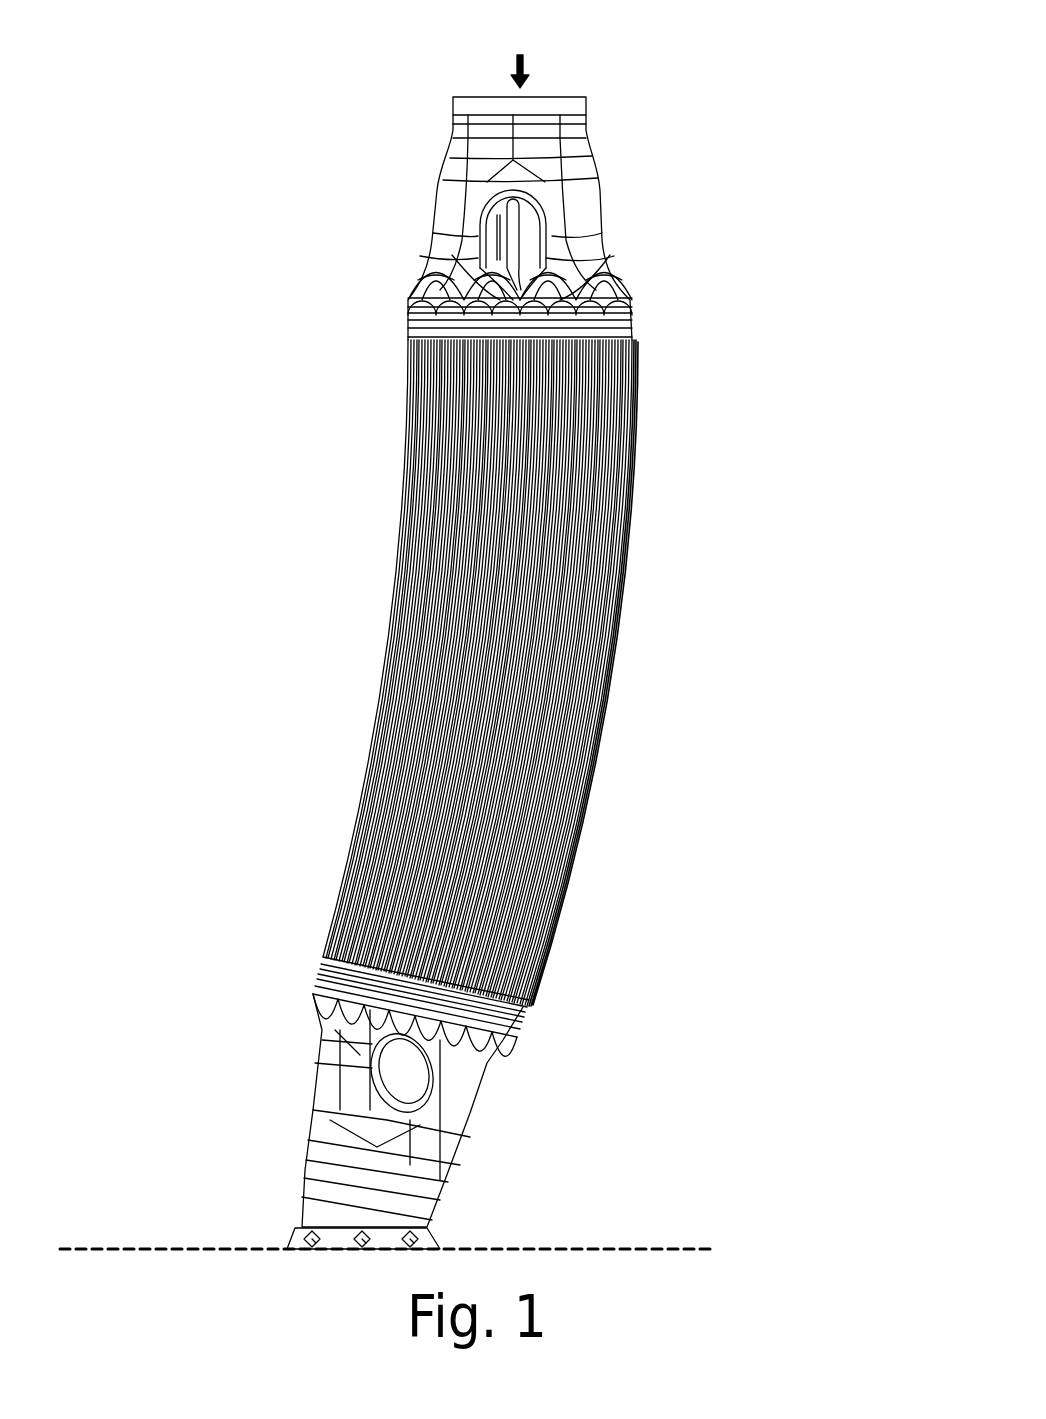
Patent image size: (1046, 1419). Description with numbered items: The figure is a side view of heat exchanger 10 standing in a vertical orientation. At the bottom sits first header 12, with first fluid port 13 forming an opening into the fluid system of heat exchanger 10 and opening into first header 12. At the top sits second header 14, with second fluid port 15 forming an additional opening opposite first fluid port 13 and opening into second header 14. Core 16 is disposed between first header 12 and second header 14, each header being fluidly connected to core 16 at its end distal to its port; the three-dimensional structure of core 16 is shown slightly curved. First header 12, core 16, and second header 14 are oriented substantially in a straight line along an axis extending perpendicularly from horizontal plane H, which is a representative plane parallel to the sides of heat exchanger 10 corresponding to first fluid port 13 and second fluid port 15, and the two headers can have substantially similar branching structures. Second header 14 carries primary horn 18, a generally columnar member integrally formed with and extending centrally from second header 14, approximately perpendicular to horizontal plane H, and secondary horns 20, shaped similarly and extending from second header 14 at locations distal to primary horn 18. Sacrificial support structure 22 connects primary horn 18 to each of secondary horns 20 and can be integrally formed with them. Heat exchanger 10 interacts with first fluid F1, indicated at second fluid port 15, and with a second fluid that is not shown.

The heat exchanger 10 is at (735, 494).
The first header 12 is at (287, 1087).
The first fluid port 13 is at (345, 1230).
The second header 14 is at (400, 203).
The second fluid port 15 is at (478, 82).
The core 16 is at (350, 594).
The primary horn 18 is at (522, 196).
The secondary horns 20 is at (578, 285).
The sacrificial support structure 22 is at (540, 228).
The horizontal plane H is at (632, 1248).
The first fluid F1 is at (522, 47).